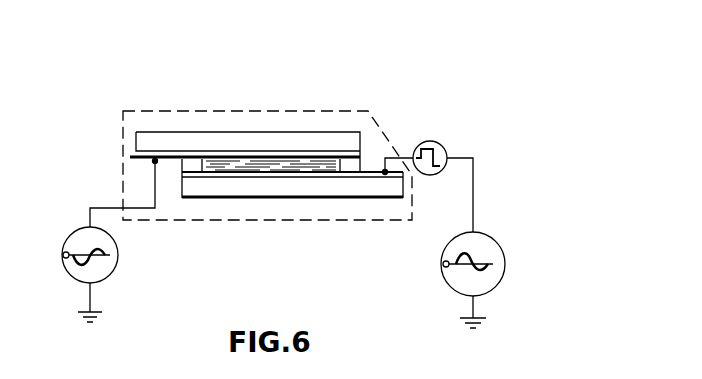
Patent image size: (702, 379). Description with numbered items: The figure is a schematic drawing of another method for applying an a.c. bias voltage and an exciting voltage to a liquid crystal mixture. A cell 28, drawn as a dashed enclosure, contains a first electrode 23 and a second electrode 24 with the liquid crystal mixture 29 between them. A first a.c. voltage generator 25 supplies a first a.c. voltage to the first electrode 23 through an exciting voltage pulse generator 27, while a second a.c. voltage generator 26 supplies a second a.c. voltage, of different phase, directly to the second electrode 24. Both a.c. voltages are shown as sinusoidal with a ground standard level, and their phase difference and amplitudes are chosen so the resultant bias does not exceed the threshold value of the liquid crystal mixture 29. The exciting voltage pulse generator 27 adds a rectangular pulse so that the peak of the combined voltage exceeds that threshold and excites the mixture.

The first electrode 23 is at (394, 178).
The second electrode 24 is at (136, 157).
The first a.c. voltage generator 25 is at (497, 240).
The second a.c. voltage generator 26 is at (118, 262).
The exciting voltage pulse generator 27 is at (447, 146).
The cell 28 is at (313, 111).
The liquid crystal mixture 29 is at (243, 165).